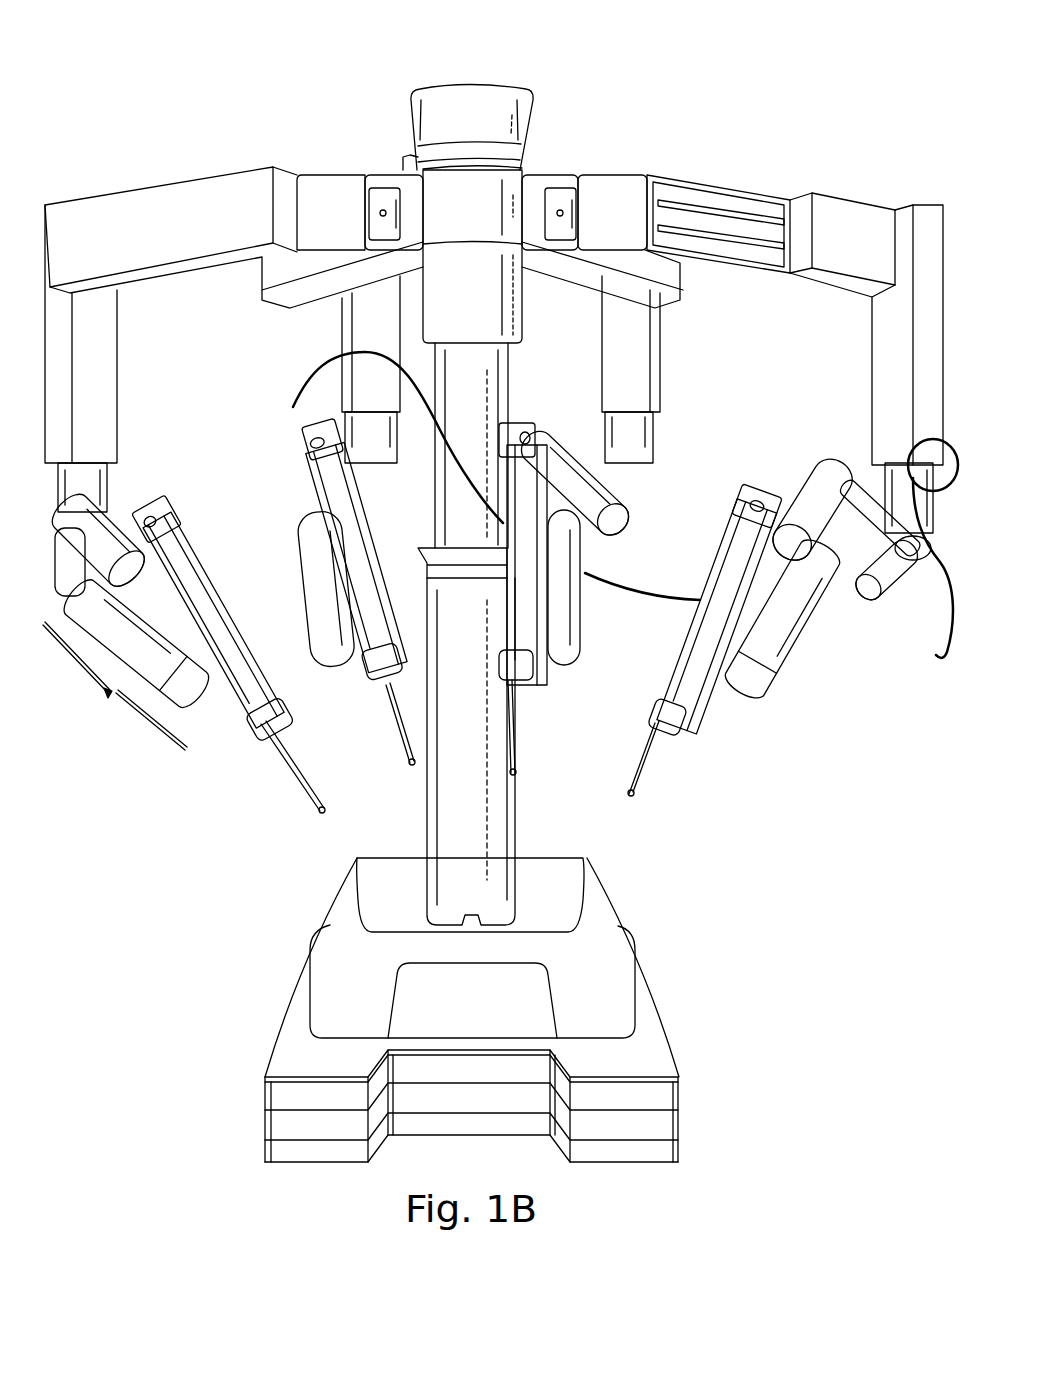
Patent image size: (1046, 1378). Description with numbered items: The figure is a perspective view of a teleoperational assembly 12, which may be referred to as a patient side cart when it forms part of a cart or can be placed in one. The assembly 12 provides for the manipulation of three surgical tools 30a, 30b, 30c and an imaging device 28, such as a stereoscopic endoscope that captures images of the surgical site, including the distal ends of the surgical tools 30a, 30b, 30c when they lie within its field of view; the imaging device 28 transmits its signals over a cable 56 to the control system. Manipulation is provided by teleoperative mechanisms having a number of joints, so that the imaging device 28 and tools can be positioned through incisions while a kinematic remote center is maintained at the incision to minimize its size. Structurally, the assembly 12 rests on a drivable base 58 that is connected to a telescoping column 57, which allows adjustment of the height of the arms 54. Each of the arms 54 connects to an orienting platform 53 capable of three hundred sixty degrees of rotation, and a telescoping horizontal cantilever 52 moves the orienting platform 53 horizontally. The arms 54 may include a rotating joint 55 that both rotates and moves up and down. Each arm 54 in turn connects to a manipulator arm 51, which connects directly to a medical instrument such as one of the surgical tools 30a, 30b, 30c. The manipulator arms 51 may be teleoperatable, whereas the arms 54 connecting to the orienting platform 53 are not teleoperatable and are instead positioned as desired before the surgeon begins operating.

The teleoperational assembly 12 is at (248, 80).
The imaging device 28 is at (320, 423).
The surgical tool 30a is at (218, 618).
The surgical tool 30b is at (519, 722).
The surgical tool 30c is at (682, 662).
The manipulator arm 51 is at (115, 686).
The telescoping horizontal cantilever 52 is at (488, 82).
The orienting platform 53 is at (458, 193).
The arms 54 is at (900, 176).
The rotating joint 55 is at (882, 480).
The cable 56 is at (952, 600).
The telescoping column 57 is at (437, 812).
The drivable base 58 is at (657, 1052).